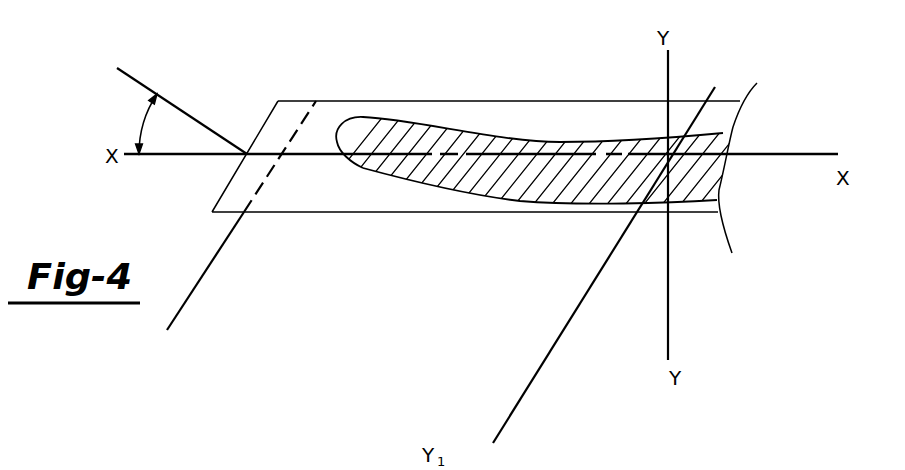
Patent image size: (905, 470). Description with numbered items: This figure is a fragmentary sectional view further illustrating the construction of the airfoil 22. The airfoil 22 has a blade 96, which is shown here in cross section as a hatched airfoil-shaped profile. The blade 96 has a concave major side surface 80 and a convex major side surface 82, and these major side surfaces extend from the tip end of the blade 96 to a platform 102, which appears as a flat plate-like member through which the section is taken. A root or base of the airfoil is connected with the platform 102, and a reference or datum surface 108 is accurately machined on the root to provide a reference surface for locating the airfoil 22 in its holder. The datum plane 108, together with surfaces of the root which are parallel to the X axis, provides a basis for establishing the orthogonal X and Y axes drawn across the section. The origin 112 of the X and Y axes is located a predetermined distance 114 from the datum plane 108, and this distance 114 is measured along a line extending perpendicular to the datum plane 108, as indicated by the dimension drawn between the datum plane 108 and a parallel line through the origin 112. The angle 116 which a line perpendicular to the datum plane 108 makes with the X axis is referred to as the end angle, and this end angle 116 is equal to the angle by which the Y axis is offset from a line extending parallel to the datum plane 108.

The airfoil 22 is at (693, 77).
The concave major side surface 80 is at (477, 137).
The convex major side surface 82 is at (463, 194).
The blade 96 is at (565, 143).
The platform 102 is at (388, 100).
The reference or datum surface 108 is at (290, 132).
The origin 112 is at (685, 154).
The predetermined distance 114 is at (508, 418).
The end angle 116 is at (139, 126).